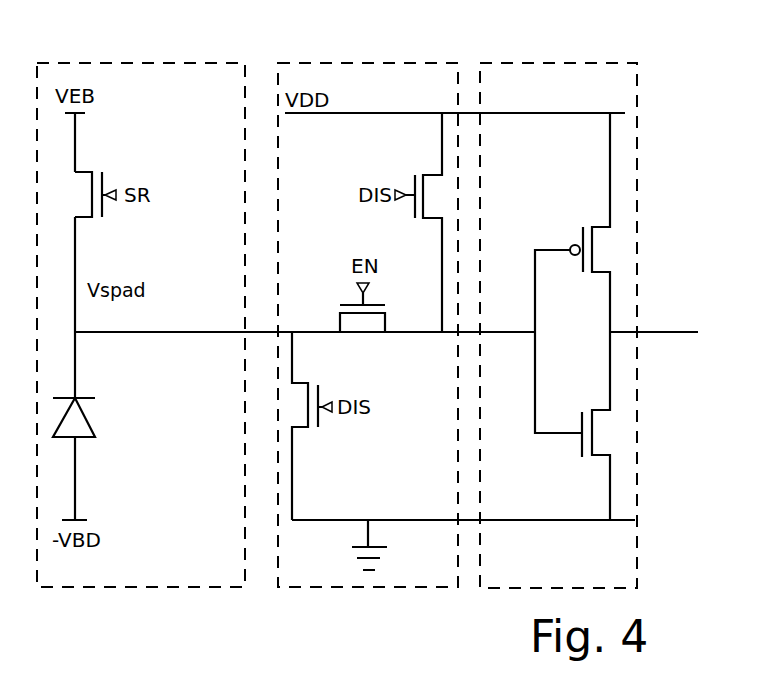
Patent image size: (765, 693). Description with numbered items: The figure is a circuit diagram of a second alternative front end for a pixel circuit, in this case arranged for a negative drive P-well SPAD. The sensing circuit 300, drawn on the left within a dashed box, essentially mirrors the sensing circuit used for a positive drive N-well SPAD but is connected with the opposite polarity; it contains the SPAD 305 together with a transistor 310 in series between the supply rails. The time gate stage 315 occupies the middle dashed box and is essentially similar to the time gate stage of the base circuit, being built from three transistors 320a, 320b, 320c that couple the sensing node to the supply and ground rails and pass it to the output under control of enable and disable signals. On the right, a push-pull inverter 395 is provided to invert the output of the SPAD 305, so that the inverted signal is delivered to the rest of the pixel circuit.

The sensing circuit 300 is at (141, 325).
The SPAD 305 is at (94, 417).
The quenching transistor 310 is at (102, 183).
The time gate stage 315 is at (368, 325).
The pull-up disable transistor 320a is at (420, 222).
The enable pass transistor 320b is at (365, 317).
The pull-down disable transistor 320c is at (317, 426).
The push-pull inverter 395 is at (558, 325).